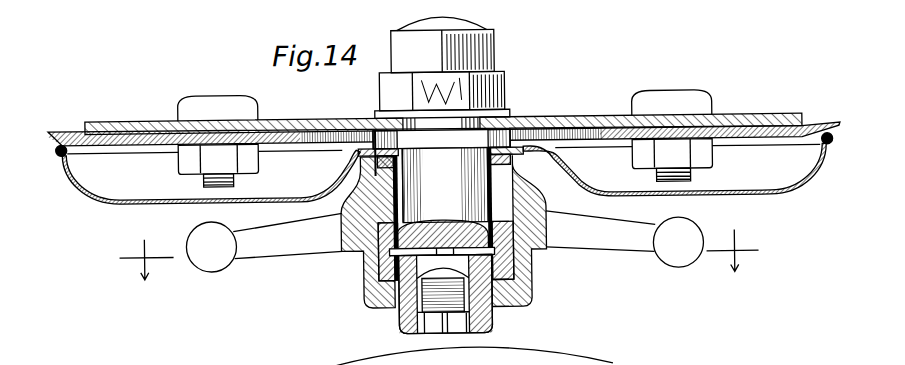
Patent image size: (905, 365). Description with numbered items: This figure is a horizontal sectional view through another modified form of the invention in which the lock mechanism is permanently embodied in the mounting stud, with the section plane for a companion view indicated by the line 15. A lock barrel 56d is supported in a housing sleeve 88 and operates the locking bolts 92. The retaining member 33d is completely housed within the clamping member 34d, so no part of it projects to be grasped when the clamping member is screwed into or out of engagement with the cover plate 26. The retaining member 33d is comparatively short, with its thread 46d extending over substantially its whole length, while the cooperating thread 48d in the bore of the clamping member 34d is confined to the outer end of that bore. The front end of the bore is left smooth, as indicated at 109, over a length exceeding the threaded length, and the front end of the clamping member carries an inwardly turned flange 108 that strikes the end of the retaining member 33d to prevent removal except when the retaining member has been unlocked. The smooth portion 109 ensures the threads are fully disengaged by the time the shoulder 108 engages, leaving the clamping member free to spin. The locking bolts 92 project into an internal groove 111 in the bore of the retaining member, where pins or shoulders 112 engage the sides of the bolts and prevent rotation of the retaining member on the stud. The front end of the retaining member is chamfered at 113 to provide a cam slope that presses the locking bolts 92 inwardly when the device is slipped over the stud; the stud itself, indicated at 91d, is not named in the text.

The section line 15 is at (436, 255).
The cover plate 26 is at (113, 201).
The retaining member 33d is at (363, 279).
The clamping member 34d is at (345, 150).
The thread 46d is at (545, 238).
The cooperating thread 48d is at (551, 211).
The lock barrel 56d is at (532, 268).
The housing sleeve 88 is at (531, 284).
The cap nut bolt 91d is at (455, 172).
The locking bolts 92 is at (362, 263).
The inwardly turned flange 108 is at (563, 163).
The unthreaded end of bore 109 is at (512, 184).
The internal groove 111 is at (383, 297).
The pins or shoulders 112 is at (497, 300).
The chamfer 113 is at (510, 228).